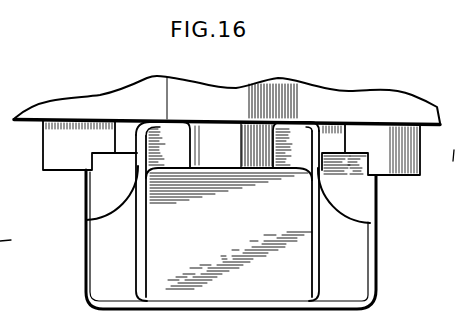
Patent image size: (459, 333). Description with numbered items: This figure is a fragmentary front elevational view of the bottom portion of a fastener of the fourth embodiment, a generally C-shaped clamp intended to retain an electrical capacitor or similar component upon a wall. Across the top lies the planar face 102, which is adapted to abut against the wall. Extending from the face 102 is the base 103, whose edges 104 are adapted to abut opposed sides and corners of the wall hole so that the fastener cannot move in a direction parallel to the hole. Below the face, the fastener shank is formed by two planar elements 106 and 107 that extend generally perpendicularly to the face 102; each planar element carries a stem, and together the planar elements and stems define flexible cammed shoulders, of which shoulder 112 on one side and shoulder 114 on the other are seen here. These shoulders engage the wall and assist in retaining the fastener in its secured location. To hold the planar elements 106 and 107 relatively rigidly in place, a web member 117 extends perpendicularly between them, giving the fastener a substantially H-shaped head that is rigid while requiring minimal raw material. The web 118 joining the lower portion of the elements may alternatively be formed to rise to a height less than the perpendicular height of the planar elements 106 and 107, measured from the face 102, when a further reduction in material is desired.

The planar face 102 is at (90, 122).
The base 103 is at (242, 123).
The edges 104 is at (222, 153).
The planar element 106 is at (103, 245).
The planar element 107 is at (348, 240).
The flexible cammed shoulder 112 is at (112, 181).
The flexible cammed shoulder 114 is at (352, 193).
The web member 117 is at (205, 257).
The web 118 is at (167, 303).